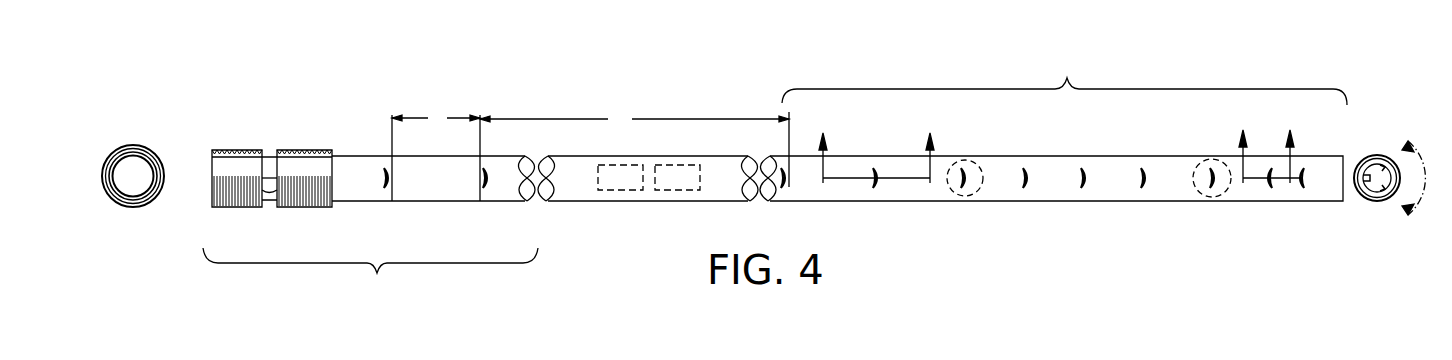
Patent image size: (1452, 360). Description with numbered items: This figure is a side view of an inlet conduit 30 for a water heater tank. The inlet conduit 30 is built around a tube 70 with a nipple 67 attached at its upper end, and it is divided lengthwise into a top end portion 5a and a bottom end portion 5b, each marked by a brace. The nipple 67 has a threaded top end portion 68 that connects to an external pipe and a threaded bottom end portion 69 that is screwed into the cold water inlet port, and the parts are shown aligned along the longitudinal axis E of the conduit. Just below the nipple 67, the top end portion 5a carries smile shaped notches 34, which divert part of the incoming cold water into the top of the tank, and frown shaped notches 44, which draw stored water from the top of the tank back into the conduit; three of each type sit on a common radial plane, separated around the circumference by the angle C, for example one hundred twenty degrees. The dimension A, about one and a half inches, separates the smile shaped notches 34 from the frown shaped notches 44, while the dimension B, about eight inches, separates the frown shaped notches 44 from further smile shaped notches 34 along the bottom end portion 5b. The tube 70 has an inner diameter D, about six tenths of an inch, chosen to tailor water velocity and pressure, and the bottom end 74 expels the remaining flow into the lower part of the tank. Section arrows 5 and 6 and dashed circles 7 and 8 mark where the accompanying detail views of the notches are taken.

The inlet conduit 30 is at (450, 90).
The smile shaped notches 34 is at (389, 188).
The frown shaped notches 44 is at (486, 190).
The nipple 67 is at (270, 150).
The top end portion of the nipple 68 is at (233, 150).
The bottom end portion of the nipple 69 is at (308, 210).
The tube 70 is at (590, 202).
The bottom end 74 is at (1345, 163).
The hole shown in FIG. 7 is at (952, 198).
The hole shown in FIG. 8 is at (1197, 200).
The top end portion 5a is at (370, 279).
The bottom end portion 5b is at (1064, 77).
The section line 5- 5 is at (1266, 151).
The section line 6- 6 is at (873, 152).
The dimension A is at (436, 118).
The dimension B is at (634, 147).
The angle C is at (1419, 178).
The inner diameter D is at (121, 202).
The longitudinal axis E is at (212, 178).